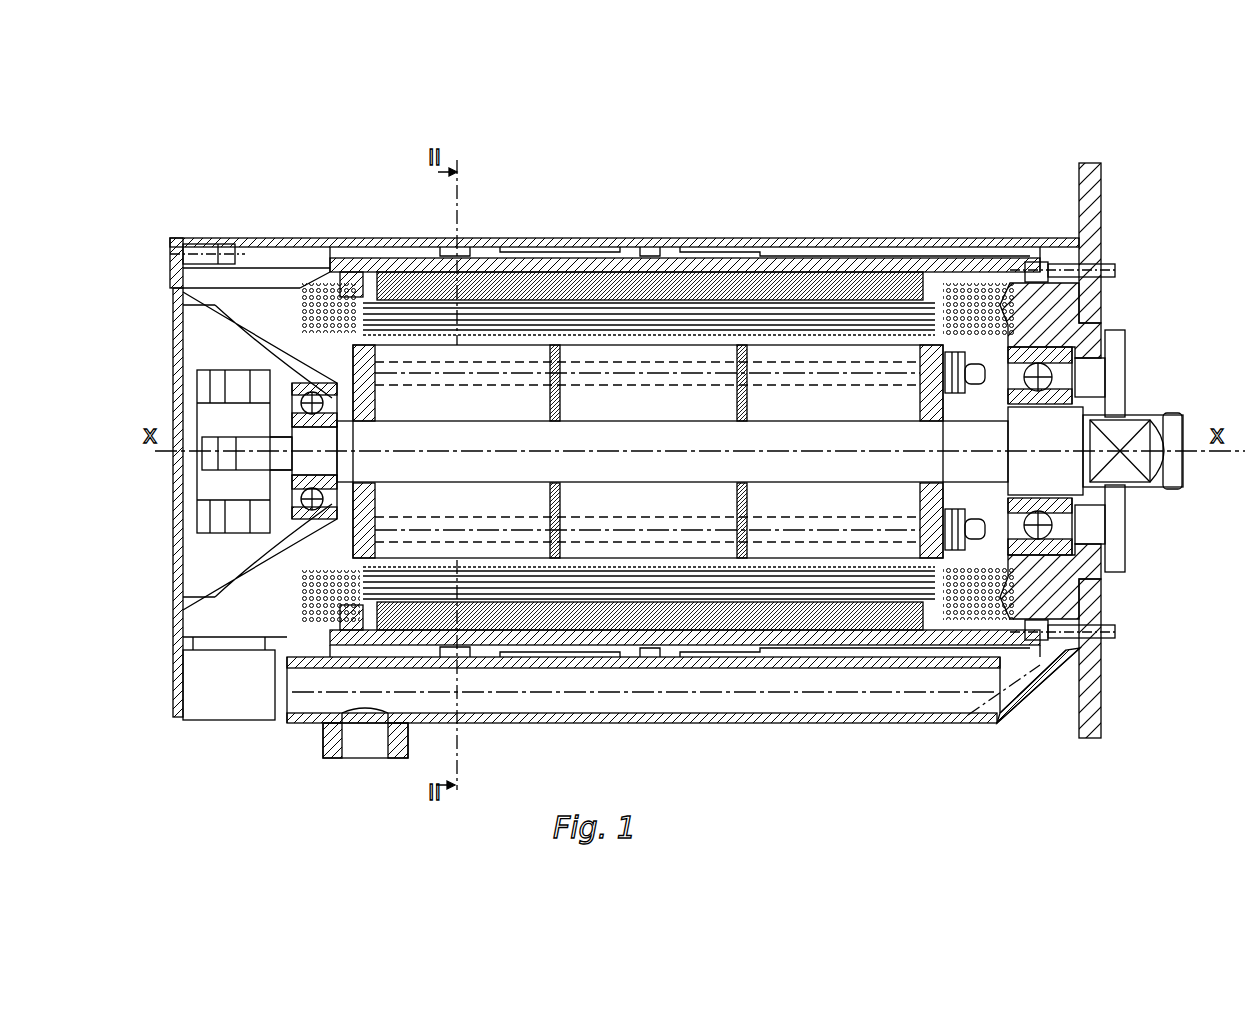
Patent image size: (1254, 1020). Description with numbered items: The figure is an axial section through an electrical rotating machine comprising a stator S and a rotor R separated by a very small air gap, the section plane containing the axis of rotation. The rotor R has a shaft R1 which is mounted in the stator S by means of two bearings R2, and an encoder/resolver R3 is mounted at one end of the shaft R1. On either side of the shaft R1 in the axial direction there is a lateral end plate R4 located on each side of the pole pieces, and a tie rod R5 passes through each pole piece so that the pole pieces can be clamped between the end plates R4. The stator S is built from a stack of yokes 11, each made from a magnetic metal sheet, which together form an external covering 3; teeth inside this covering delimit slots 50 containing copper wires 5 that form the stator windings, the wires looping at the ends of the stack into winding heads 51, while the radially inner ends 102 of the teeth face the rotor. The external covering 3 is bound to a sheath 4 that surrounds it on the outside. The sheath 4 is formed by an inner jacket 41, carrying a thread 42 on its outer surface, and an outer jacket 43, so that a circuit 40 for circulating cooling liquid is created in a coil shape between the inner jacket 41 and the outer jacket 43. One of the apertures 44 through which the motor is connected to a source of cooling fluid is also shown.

The stator S is at (190, 230).
The rotor R is at (328, 346).
The shaft R1 is at (1057, 430).
The bearings R2 is at (1097, 512).
The encoder/resolver R3 is at (205, 425).
The lateral end plate R4 is at (1067, 342).
The tie rod R5 is at (657, 537).
The radially inner ends of the teeth 102 is at (802, 347).
The external covering 3 is at (815, 630).
The sheath 4 is at (430, 250).
The circuit 40 is at (478, 258).
The inner jacket 41 is at (540, 265).
The thread 42 is at (622, 250).
The outer jacket 43 is at (700, 248).
The aperture 44 is at (363, 680).
The copper wires 5 is at (746, 590).
The slots 50 is at (870, 603).
The winding heads 51 is at (290, 286).
The stack of yokes 11 is at (860, 272).